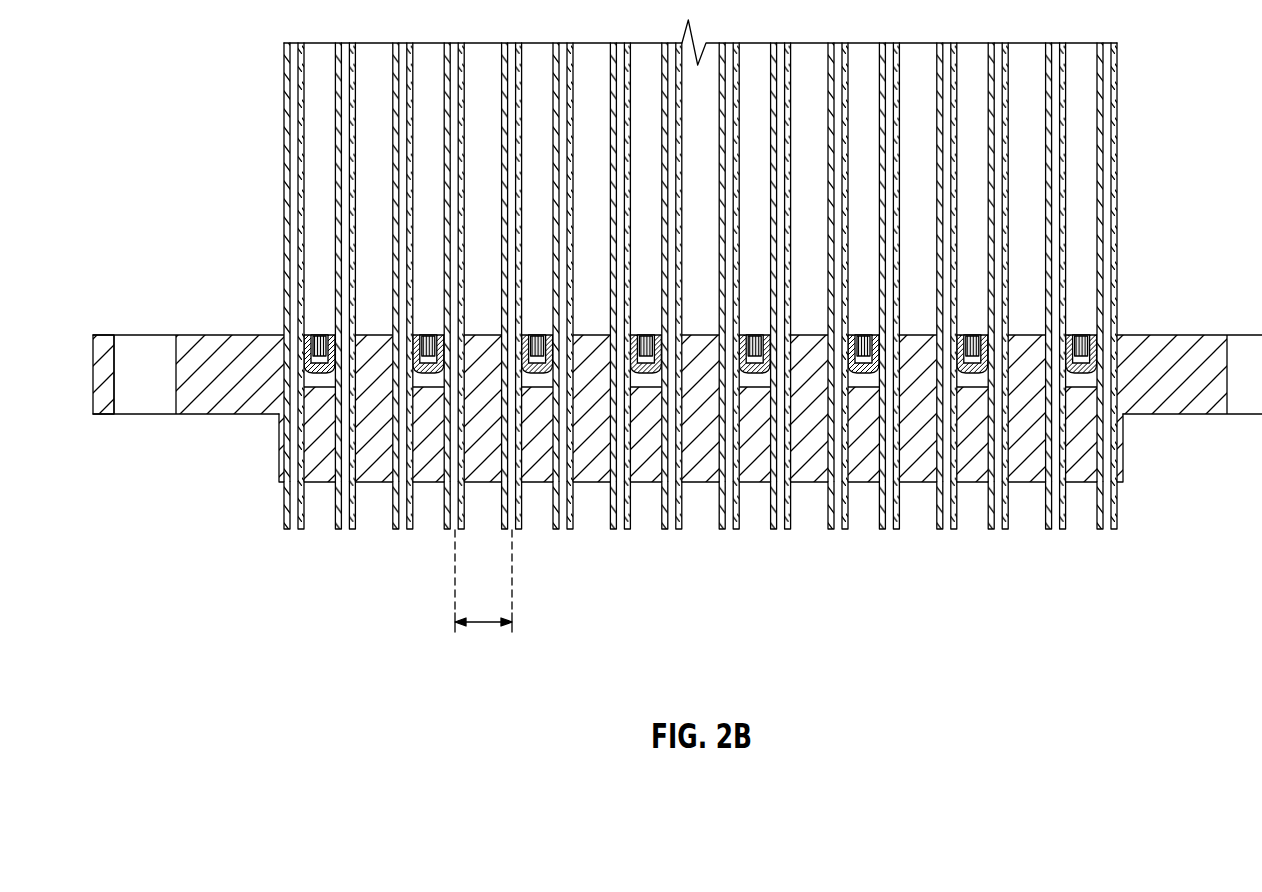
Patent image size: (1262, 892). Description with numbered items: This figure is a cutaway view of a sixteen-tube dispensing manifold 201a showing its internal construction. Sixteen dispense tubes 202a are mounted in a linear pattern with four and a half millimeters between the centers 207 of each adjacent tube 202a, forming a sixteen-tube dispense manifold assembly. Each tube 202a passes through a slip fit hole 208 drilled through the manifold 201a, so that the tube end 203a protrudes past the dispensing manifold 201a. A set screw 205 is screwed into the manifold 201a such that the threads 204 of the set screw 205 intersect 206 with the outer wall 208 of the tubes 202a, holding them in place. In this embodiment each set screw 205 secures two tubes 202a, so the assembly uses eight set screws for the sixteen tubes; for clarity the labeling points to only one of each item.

The dispensing manifold 201a is at (223, 403).
The dispense tube 202a is at (287, 96).
The tube end 203a is at (282, 493).
The threads 204 is at (303, 337).
The set screw 205 is at (318, 338).
The intersect 206 is at (338, 373).
The centers 207 is at (482, 623).
The slip fit hole 208 is at (282, 352).